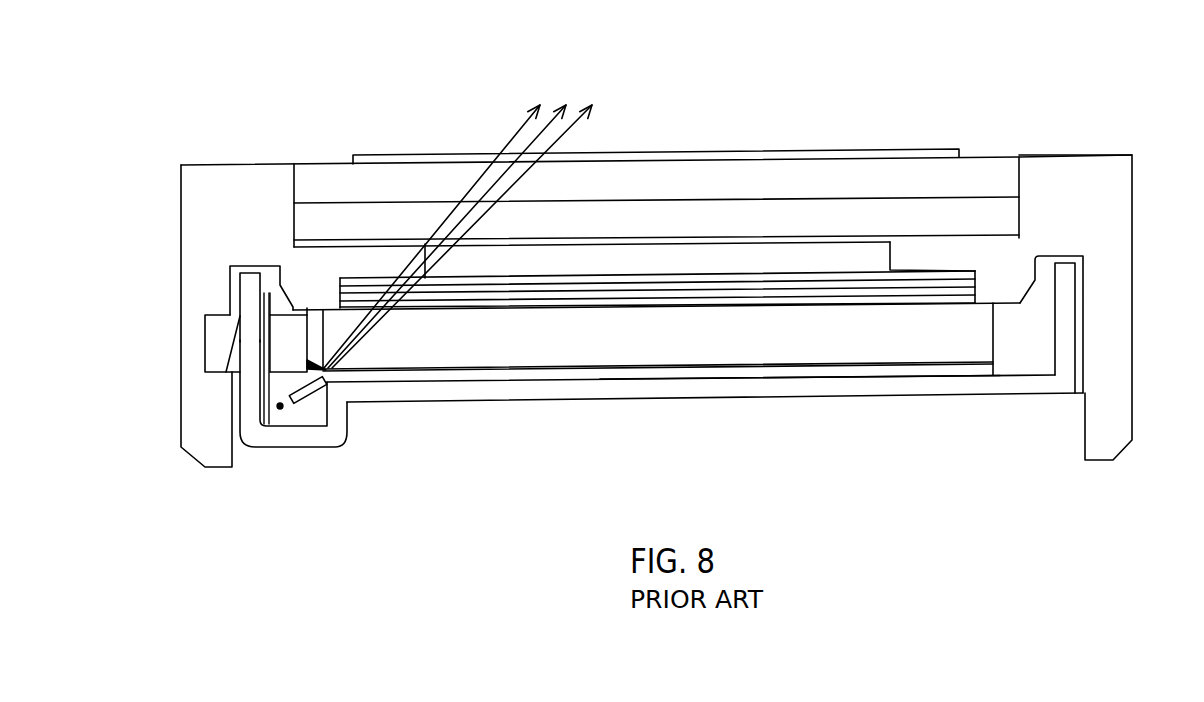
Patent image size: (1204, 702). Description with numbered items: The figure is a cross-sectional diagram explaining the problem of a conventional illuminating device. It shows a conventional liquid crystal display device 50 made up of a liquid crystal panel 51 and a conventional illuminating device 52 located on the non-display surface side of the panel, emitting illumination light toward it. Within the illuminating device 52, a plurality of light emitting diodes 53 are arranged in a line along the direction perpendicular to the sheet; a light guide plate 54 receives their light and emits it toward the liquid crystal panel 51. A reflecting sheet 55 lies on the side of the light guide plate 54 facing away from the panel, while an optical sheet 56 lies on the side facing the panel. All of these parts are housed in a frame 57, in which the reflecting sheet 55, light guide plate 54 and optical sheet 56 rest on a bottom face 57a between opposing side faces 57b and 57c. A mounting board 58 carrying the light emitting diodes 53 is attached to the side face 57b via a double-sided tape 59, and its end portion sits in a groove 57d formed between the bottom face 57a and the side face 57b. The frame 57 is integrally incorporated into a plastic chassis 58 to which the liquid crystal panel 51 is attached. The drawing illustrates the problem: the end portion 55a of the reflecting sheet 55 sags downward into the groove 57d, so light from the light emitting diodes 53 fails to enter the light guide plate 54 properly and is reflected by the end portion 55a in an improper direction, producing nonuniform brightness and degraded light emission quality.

The liquid crystal display device 50 is at (624, 85).
The liquid crystal panel 51 is at (686, 152).
The illuminating device 52 is at (945, 397).
The light emitting diodes 53 is at (285, 353).
The light guide plate 54 is at (510, 342).
The reflecting sheet 55 is at (678, 380).
The end portion of the reflecting sheet 55a is at (310, 393).
The optical sheet 56 is at (794, 276).
The frame 57 is at (581, 400).
The bottom face 57a is at (873, 385).
The side face 57b is at (252, 392).
The side face 57c is at (1062, 325).
The groove 57d is at (275, 418).
The mounting board 58 is at (1100, 206).
The double-sided tape 59 is at (266, 426).